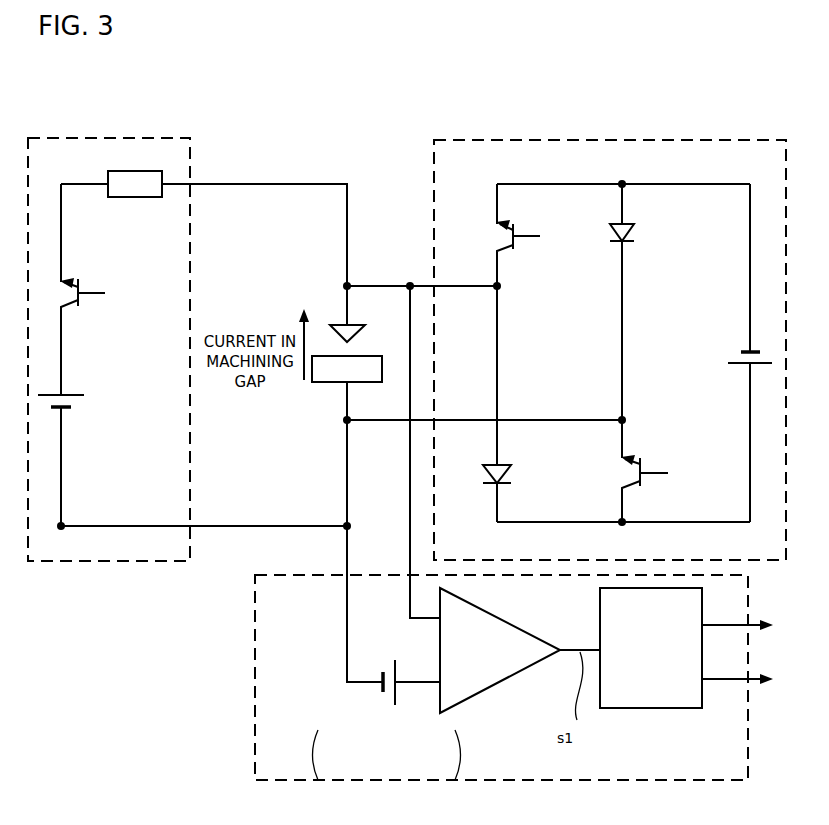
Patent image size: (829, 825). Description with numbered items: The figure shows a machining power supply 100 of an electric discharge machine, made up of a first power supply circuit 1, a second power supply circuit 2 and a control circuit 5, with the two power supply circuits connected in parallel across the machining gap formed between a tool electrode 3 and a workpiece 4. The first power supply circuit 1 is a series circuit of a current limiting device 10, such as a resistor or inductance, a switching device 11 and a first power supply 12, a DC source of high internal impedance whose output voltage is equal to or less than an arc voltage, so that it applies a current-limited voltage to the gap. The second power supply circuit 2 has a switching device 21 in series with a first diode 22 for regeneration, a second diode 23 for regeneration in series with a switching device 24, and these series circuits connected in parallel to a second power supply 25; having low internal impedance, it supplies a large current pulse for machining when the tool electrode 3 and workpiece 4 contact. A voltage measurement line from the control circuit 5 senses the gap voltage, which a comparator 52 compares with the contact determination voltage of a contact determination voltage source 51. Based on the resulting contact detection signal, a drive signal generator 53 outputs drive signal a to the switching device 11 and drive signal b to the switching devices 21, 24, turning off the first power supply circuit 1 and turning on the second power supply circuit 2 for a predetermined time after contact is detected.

The machining power supply 100 is at (390, 150).
The first power supply circuit 1 is at (108, 138).
The current limiting device 10 is at (148, 198).
The switching device 11 is at (87, 284).
The first power supply 12 is at (77, 388).
The second power supply circuit 2 is at (612, 138).
The switching device 21 is at (523, 231).
The first diode 22 is at (511, 482).
The second diode 23 is at (628, 240).
The switching device 24 is at (650, 467).
The second power supply 25 is at (742, 350).
The tool electrode 3 is at (332, 322).
The workpiece 4 is at (330, 383).
The control circuit 5 is at (255, 697).
The contact determination voltage source 51 is at (382, 684).
The comparator 52 is at (498, 686).
The drive signal generator 53 is at (688, 712).